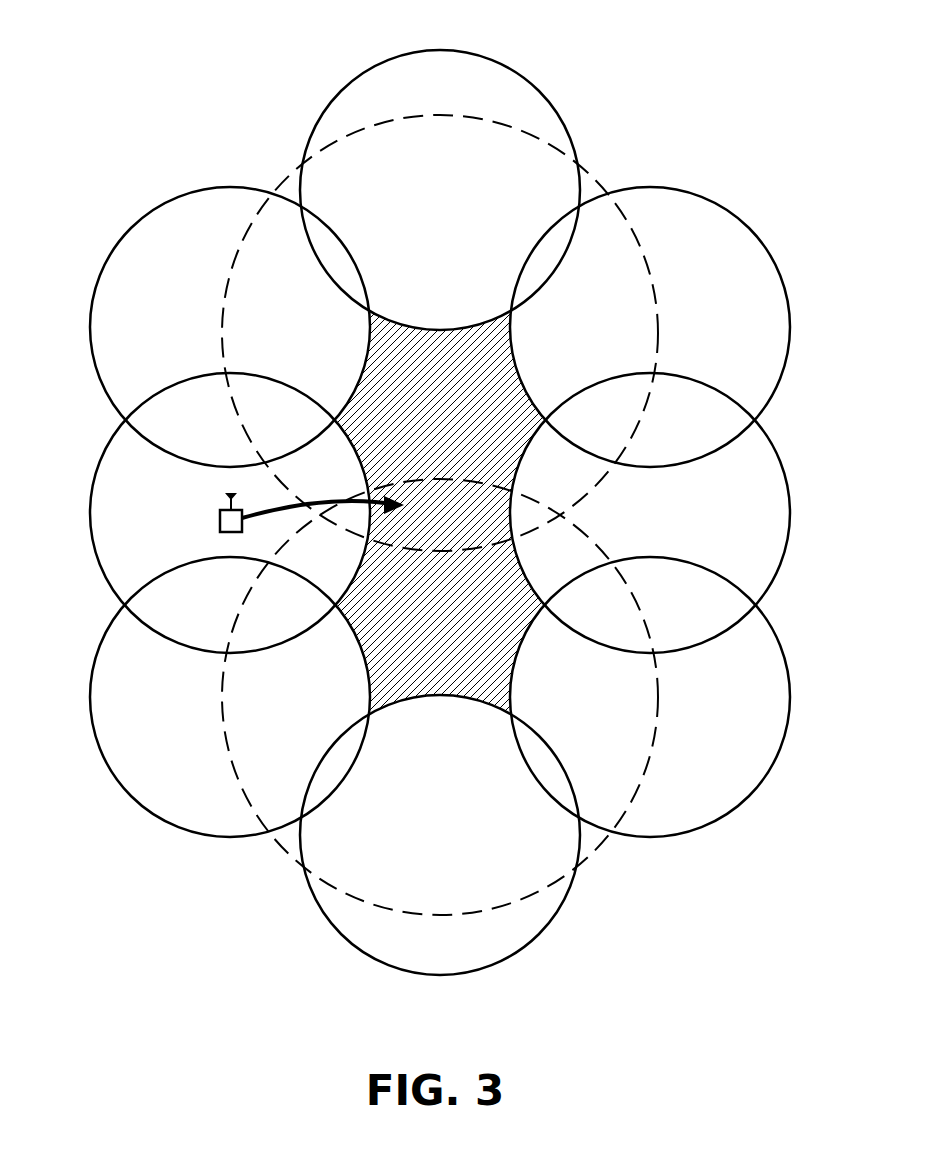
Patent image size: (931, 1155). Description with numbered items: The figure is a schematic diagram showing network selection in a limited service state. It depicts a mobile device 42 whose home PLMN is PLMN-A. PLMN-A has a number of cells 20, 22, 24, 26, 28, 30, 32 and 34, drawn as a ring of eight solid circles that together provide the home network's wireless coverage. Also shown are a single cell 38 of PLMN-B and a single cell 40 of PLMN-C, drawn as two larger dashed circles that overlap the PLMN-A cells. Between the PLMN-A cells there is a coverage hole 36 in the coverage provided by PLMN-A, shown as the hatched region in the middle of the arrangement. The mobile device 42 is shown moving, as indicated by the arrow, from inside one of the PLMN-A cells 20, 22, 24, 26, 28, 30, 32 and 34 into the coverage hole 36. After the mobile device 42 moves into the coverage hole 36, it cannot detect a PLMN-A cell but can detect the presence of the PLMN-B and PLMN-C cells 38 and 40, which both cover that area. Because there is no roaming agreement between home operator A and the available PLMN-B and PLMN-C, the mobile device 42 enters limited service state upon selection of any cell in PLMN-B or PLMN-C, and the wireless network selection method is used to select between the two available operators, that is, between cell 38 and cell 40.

The cell 20 is at (90, 327).
The cell 22 is at (90, 513).
The cell 24 is at (90, 700).
The cell 26 is at (440, 975).
The cell 28 is at (790, 700).
The cell 30 is at (790, 513).
The cell 32 is at (790, 327).
The cell 34 is at (440, 50).
The coverage hole 36 is at (423, 638).
The cell of PLMN-B 38 is at (287, 178).
The cell of PLMN-C 40 is at (286, 850).
The mobile device 42 is at (220, 520).